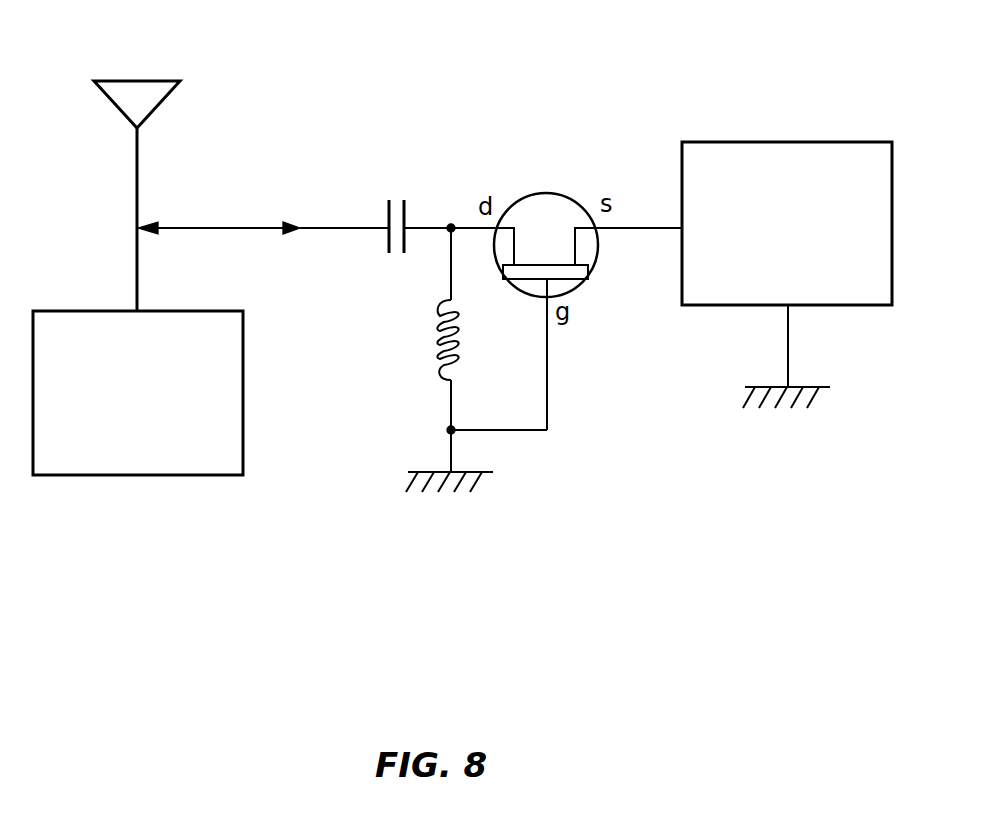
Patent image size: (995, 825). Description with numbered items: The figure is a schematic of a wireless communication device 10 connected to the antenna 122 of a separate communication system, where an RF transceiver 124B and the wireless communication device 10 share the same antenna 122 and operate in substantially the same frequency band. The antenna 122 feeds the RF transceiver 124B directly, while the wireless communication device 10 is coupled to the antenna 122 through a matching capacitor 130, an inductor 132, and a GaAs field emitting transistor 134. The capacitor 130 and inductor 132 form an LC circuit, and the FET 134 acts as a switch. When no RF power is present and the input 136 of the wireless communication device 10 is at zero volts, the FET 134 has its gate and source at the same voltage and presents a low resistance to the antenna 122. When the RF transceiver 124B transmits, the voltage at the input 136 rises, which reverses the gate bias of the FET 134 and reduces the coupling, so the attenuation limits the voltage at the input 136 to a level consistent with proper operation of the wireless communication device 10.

The antenna 122 is at (155, 80).
The RF transceiver 124B is at (106, 397).
The matching capacitor 130 is at (388, 212).
The inductor 132 is at (437, 355).
The GaAs field emitting transistor 134 is at (557, 195).
The input 136 is at (627, 228).
The wireless communication device 10 is at (771, 229).